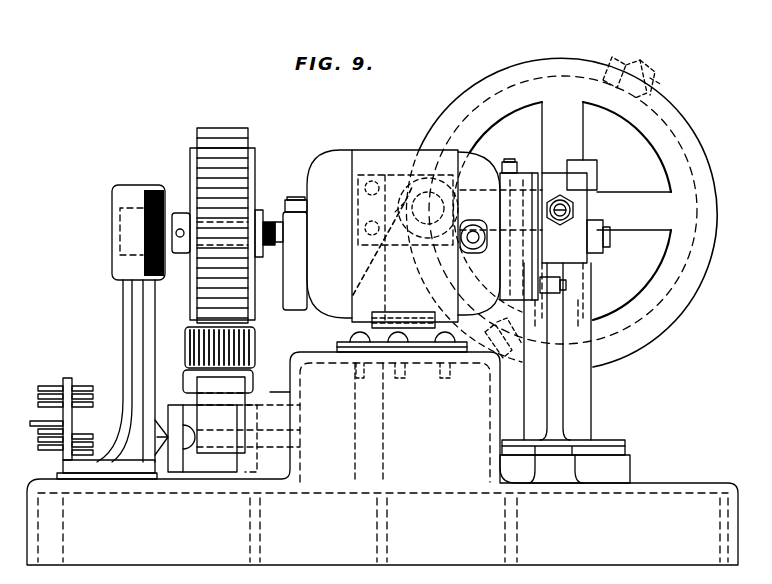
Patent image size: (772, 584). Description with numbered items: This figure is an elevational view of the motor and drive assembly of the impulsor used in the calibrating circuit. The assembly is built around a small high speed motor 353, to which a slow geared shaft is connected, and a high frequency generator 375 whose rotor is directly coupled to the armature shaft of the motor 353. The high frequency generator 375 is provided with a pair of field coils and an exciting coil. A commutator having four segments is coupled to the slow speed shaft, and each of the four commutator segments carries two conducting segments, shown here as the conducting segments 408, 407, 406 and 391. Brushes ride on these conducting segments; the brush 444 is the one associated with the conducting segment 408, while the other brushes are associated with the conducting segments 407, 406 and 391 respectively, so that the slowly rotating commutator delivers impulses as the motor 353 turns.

The high speed motor 353 is at (335, 146).
The brush 444 is at (362, 255).
The high frequency generator 375 is at (256, 334).
The conducting segment 391 is at (624, 60).
The conducting segment 406 is at (631, 62).
The conducting segment 407 is at (652, 74).
The conducting segment 408 is at (662, 86).